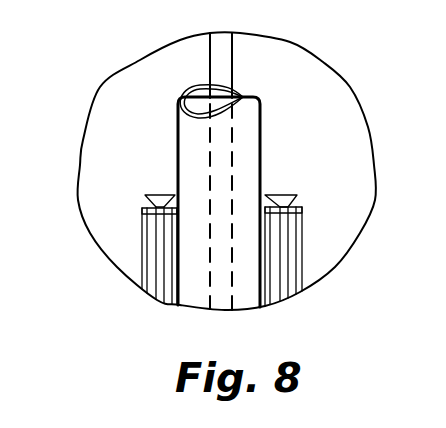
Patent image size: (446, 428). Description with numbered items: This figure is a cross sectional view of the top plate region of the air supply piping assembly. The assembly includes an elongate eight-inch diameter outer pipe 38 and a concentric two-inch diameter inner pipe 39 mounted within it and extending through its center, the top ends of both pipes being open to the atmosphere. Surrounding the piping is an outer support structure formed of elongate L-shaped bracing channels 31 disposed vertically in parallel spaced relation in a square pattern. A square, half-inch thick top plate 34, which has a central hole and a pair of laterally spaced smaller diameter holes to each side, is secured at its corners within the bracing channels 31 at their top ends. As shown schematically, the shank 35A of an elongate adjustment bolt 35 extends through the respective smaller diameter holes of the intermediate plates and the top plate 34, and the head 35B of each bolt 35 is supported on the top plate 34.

The inner pipe 39 is at (235, 68).
The outer pipe 38 is at (263, 117).
The top plate 34 is at (145, 206).
The head 35B is at (162, 195).
The adjustment bolt 35 is at (142, 223).
The shank 35A is at (158, 249).
The bracing channel 31 is at (142, 271).